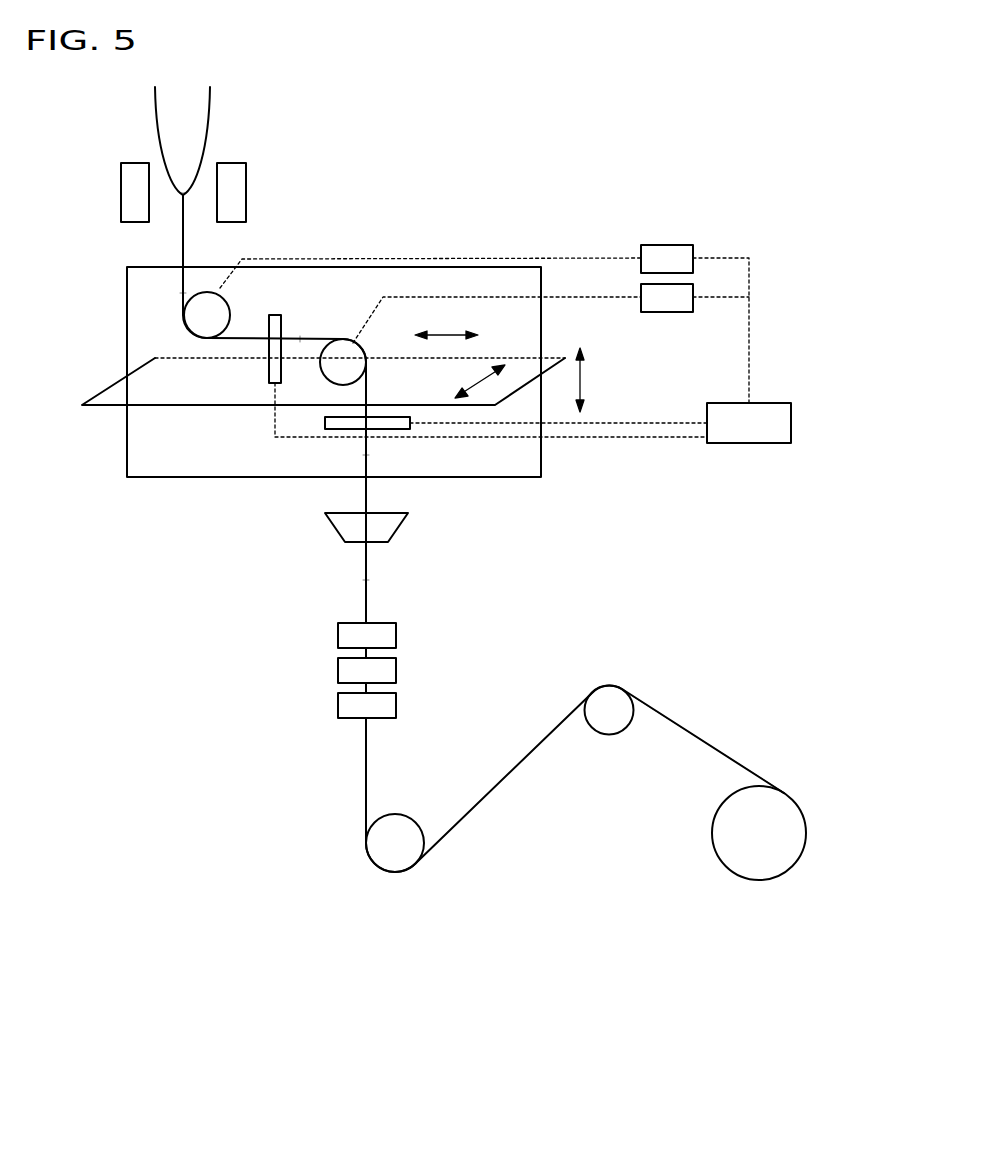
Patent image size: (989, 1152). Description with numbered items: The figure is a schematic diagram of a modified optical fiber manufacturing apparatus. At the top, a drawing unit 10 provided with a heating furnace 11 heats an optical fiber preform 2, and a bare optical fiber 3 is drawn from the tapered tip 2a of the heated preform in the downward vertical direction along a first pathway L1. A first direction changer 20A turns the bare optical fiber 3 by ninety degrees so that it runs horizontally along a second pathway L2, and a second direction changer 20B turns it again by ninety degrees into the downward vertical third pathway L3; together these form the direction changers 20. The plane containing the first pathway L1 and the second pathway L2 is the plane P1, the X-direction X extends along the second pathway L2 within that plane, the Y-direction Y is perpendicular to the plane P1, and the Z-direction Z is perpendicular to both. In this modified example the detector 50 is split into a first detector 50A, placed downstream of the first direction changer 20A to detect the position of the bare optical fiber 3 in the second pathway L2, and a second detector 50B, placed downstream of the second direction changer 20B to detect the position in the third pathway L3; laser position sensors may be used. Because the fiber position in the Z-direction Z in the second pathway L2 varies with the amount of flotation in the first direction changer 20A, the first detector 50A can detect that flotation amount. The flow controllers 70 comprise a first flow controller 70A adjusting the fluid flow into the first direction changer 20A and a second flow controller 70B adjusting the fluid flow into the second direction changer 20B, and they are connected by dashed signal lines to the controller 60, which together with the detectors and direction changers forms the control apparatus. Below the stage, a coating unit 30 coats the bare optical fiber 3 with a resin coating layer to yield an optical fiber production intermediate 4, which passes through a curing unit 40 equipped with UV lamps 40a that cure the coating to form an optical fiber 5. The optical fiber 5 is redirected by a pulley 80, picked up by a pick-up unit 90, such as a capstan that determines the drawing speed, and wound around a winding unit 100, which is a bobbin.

The optical fiber preform 2 is at (210, 112).
The preform tip 2a is at (185, 196).
The bare optical fiber 3 is at (183, 243).
The drawing unit 10 is at (135, 166).
The heating furnace 11 is at (121, 197).
The direction changers 20 is at (275, 282).
The first direction changer 20A is at (230, 303).
The second direction changer 20B is at (352, 340).
The first pathway L1 is at (184, 293).
The second pathway L2 is at (300, 339).
The third pathway L3 is at (366, 455).
The plane P1 is at (541, 327).
The X-direction X is at (446, 321).
The Y-direction Y is at (472, 381).
The Z-direction Z is at (588, 380).
The detector 50 is at (271, 394).
The first detector 50A is at (273, 385).
The second detector 50B is at (343, 430).
The flow controllers 70 is at (724, 297).
The first flow controller 70A is at (667, 244).
The second flow controller 70B is at (667, 312).
The controller 60 is at (750, 443).
The coating unit 30 is at (325, 530).
The optical fiber production intermediate 4 is at (366, 580).
The curing unit 40 is at (288, 671).
The UV lamps 40a is at (338, 636).
The optical fiber 5 is at (705, 740).
The pulley 80 is at (395, 872).
The pick-up unit 90 is at (609, 734).
The winding unit 100 is at (758, 880).